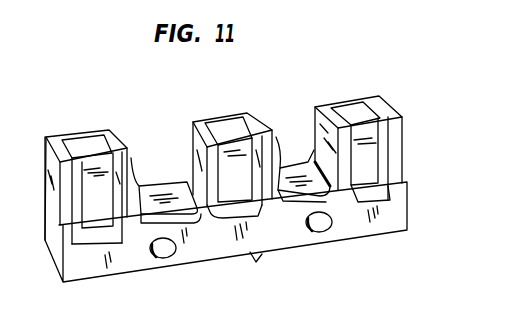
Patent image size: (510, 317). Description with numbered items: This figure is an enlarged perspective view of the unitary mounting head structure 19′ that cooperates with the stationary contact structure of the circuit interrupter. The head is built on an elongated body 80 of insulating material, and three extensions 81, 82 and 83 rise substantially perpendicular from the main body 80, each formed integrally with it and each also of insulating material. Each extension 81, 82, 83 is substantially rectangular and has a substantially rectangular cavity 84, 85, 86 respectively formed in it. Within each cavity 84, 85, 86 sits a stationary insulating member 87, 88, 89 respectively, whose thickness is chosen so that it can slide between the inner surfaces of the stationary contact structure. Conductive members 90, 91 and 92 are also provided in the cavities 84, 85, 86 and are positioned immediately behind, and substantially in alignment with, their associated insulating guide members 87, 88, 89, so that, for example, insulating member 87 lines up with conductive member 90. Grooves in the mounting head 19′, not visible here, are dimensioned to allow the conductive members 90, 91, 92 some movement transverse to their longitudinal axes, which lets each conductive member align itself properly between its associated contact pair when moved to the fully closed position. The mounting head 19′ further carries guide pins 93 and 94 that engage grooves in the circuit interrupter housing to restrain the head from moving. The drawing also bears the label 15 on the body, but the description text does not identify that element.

The base 15 is at (70, 260).
The unitary mounting head structure 19′ is at (258, 258).
The elongated body 80 is at (297, 242).
The extension 81 is at (406, 129).
The extension 82 is at (275, 144).
The extension 83 is at (136, 160).
The rectangular cavity 84 is at (339, 112).
The rectangular cavity 85 is at (215, 121).
The rectangular cavity 86 is at (74, 143).
The stationary insulating member 87 is at (385, 112).
The stationary insulating member 88 is at (238, 143).
The stationary insulating member 89 is at (98, 165).
The conductive member 90 is at (363, 178).
The conductive member 91 is at (230, 193).
The conductive member 92 is at (90, 212).
The guide pin 93 is at (320, 233).
The guide pin 94 is at (163, 259).